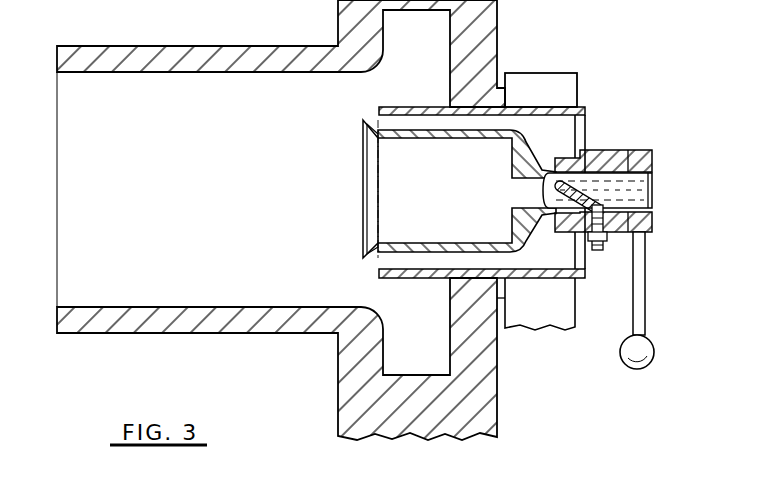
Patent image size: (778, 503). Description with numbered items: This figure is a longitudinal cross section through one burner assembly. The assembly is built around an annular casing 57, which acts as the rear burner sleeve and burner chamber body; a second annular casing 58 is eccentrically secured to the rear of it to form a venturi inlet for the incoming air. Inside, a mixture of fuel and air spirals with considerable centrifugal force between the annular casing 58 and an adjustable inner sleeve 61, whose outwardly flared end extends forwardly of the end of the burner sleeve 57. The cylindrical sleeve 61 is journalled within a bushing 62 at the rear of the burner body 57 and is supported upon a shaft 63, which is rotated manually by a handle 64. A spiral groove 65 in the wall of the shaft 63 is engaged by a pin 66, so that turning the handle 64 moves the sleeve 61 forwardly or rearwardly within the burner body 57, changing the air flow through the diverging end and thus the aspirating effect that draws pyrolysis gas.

The annular casing 57 is at (423, 106).
The annular casing 58 is at (572, 72).
The adjustable inner sleeve 61 is at (403, 175).
The bushing 62 is at (605, 149).
The shaft 63 is at (655, 195).
The handle 64 is at (645, 310).
The spiral groove 65 is at (540, 200).
The pin 66 is at (598, 250).